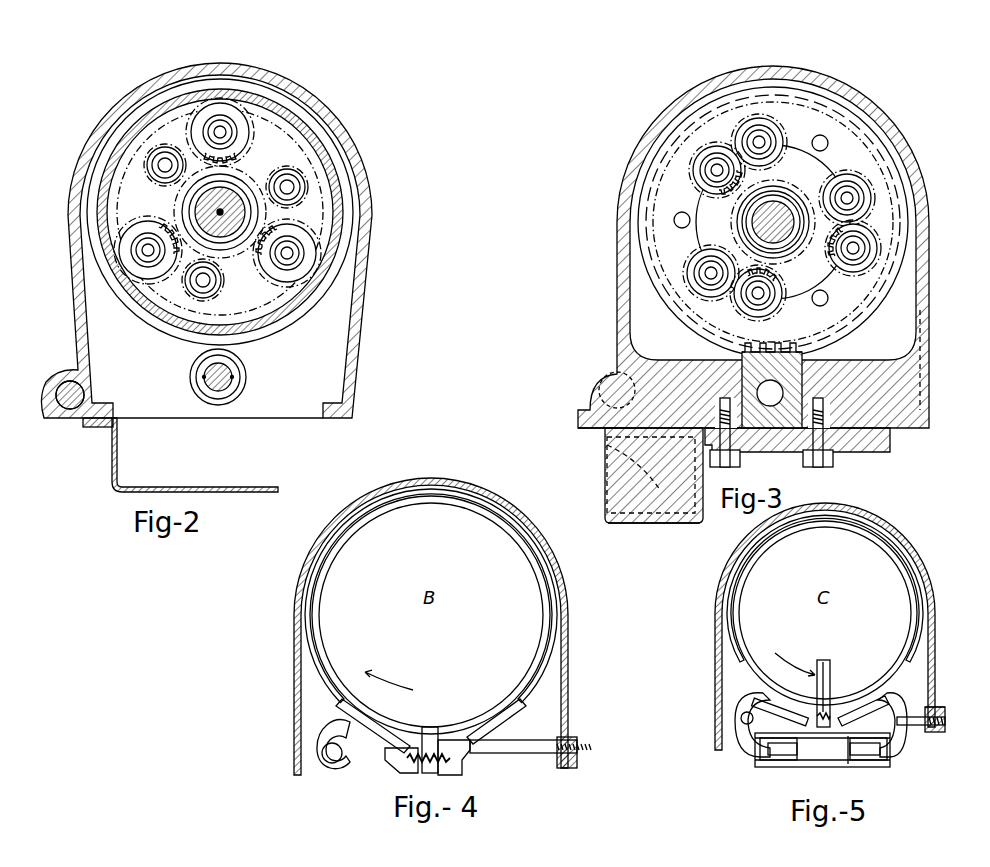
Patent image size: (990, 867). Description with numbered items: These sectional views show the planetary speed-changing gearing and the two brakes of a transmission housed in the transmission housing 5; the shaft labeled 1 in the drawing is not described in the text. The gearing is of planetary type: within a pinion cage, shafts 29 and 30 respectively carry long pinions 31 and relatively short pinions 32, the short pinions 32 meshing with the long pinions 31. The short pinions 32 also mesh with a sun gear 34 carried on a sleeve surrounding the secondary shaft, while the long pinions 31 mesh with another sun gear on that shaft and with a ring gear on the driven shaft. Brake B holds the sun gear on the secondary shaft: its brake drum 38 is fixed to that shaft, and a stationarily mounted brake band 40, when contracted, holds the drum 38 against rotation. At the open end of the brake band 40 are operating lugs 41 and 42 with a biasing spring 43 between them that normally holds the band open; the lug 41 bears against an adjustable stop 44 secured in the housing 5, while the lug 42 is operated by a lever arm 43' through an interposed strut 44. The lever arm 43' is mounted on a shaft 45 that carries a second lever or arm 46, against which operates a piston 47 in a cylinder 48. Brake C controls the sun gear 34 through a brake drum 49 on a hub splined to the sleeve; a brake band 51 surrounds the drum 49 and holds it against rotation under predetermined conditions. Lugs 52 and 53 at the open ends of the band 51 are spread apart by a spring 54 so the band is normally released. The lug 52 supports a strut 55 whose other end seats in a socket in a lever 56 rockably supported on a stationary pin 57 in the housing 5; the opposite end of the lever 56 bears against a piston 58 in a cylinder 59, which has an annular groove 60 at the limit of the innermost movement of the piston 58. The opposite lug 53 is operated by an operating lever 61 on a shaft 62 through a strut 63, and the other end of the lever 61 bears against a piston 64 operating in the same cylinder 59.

In FIG. 2, the drive shaft 1 is at (212, 210).
In FIG. 3, the drive shaft 1 is at (748, 227).
In FIG. 4, the transmission housing 5 is at (568, 623).
In FIG. 5, the transmission housing 5 is at (935, 643).
In FIG. 2, the shaft 29 is at (222, 132).
In FIG. 3, the shaft 29 is at (758, 142).
In FIG. 2, the shaft 30 is at (163, 165).
In FIG. 3, the shaft 30 is at (700, 175).
In FIG. 2, the long pinion 31 is at (240, 133).
In FIG. 3, the short pinion 32 is at (713, 162).
In FIG. 3, the sun gear 34 is at (732, 215).
In FIG. 4, the brake drum 38 is at (527, 652).
In FIG. 4, the brake band 40 is at (538, 677).
In FIG. 4, the operating lug 41 is at (460, 740).
In FIG. 4, the operating lug 42 is at (412, 747).
In FIG. 4, the biasing spring 43 is at (432, 732).
In FIG. 4, the lever arm 43' is at (301, 738).
In FIG. 4, the adjustable stop 44 is at (543, 743).
In FIG. 3, the shaft 45 is at (600, 424).
In FIG. 4, the shaft 45 is at (320, 757).
In FIG. 3, the second lever 46 is at (606, 460).
In FIG. 3, the piston 47 is at (640, 485).
In FIG. 3, the cylinder 48 is at (625, 526).
In FIG. 5, the brake drum 49 is at (880, 580).
In FIG. 5, the brake band 51 is at (920, 588).
In FIG. 5, the lug 52 is at (827, 712).
In FIG. 5, the lug 53 is at (822, 680).
In FIG. 5, the spring 54 is at (825, 700).
In FIG. 5, the strut 55 is at (890, 728).
In FIG. 5, the lever 56 is at (905, 717).
In FIG. 5, the stationary pin 57 is at (918, 730).
In FIG. 5, the piston 58 is at (880, 765).
In FIG. 5, the cylinder 59 is at (870, 768).
In FIG. 5, the annular groove 60 is at (860, 757).
In FIG. 5, the operating lever 61 is at (738, 722).
In FIG. 5, the shaft 62 is at (745, 715).
In FIG. 5, the strut 63 is at (762, 700).
In FIG. 5, the piston 64 is at (775, 750).